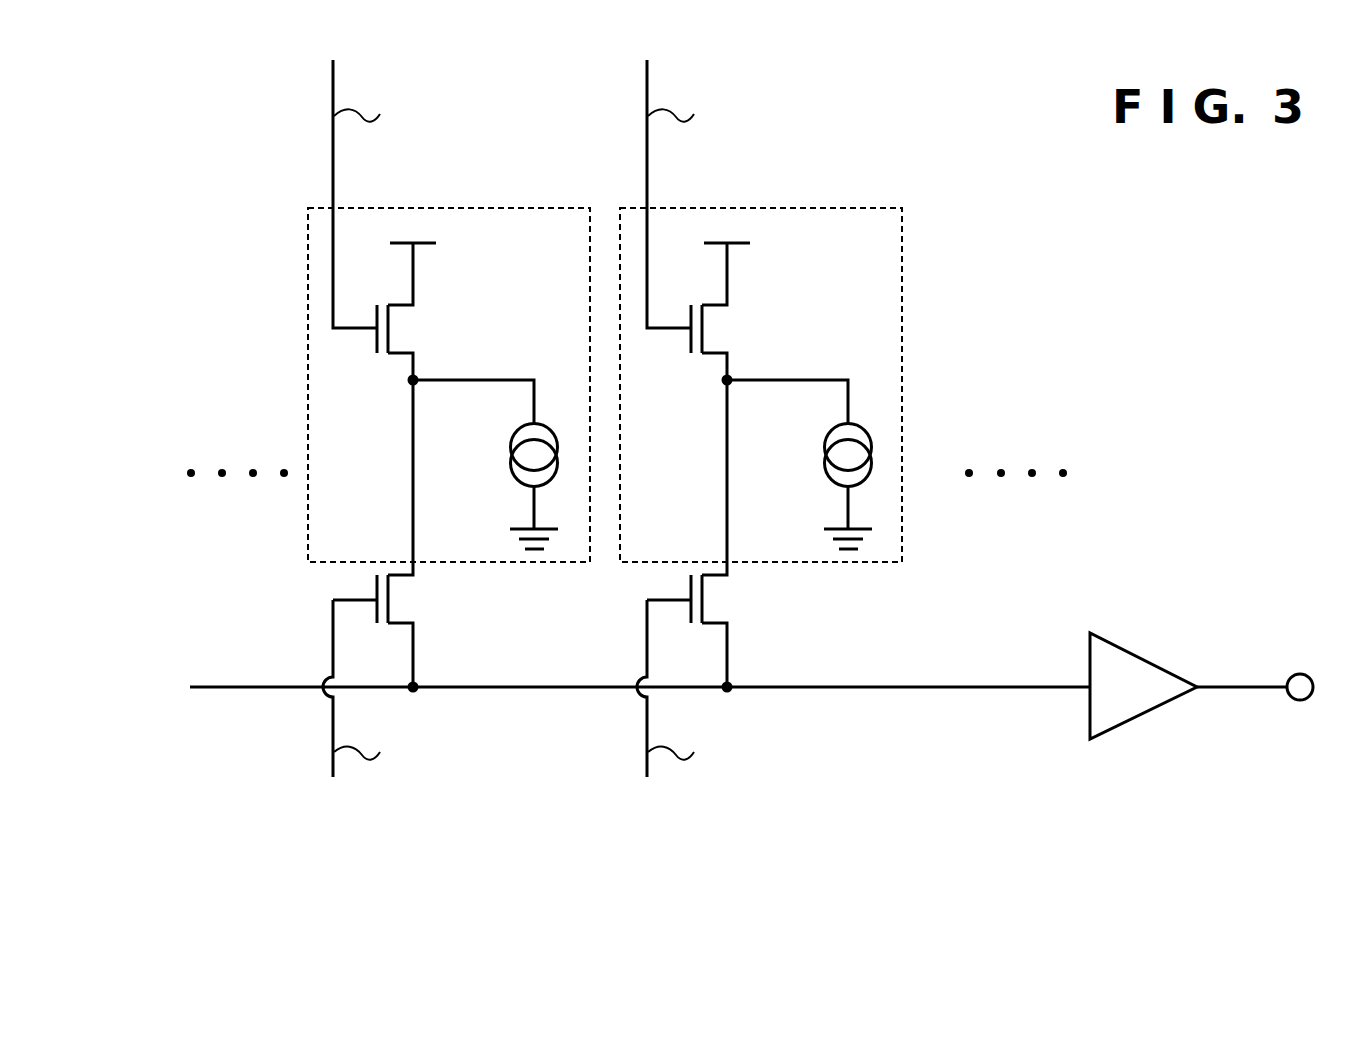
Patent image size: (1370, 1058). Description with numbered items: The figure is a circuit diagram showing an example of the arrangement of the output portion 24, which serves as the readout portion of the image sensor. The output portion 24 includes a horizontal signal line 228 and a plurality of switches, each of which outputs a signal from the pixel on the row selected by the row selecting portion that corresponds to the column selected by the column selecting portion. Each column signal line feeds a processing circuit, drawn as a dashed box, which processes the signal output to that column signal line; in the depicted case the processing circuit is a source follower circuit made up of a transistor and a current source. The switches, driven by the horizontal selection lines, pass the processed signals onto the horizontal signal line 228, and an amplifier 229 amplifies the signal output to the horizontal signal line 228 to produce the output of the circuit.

The output portion 24 is at (753, 481).
The horizontal signal line 228 is at (935, 688).
The amplifier 229 is at (1147, 712).